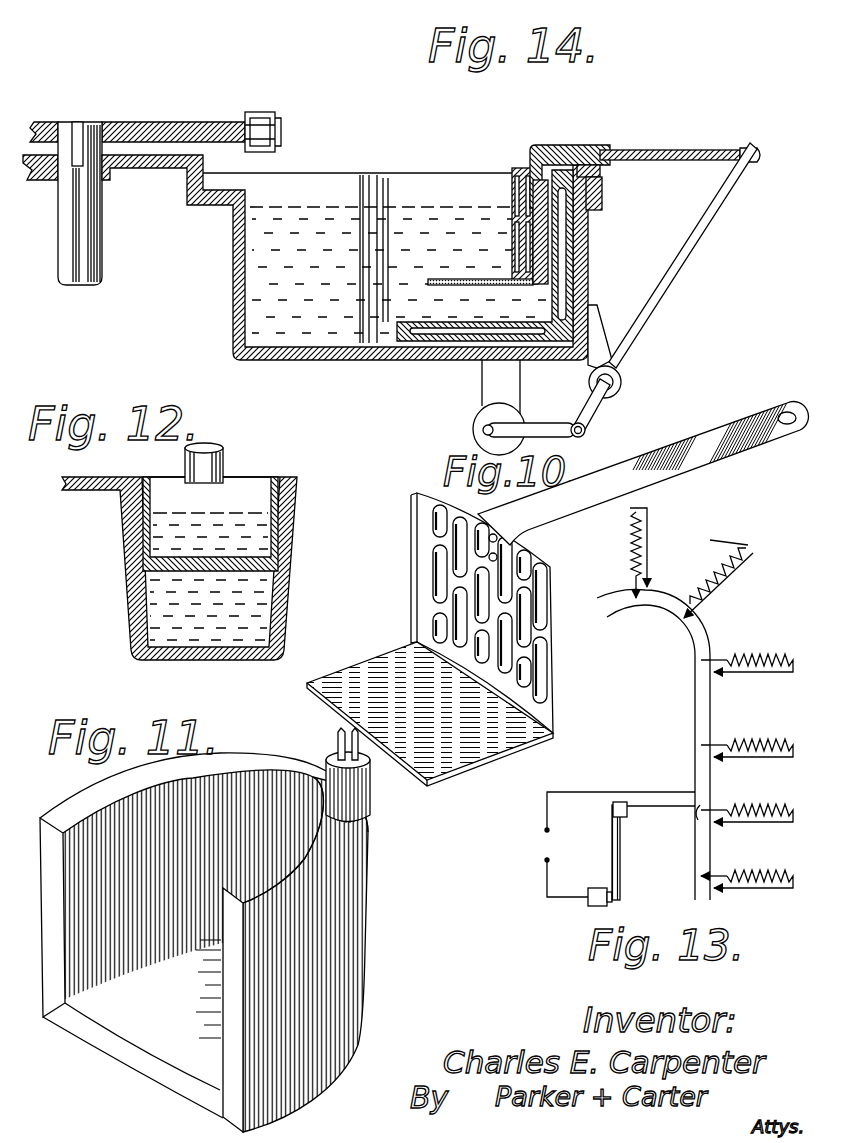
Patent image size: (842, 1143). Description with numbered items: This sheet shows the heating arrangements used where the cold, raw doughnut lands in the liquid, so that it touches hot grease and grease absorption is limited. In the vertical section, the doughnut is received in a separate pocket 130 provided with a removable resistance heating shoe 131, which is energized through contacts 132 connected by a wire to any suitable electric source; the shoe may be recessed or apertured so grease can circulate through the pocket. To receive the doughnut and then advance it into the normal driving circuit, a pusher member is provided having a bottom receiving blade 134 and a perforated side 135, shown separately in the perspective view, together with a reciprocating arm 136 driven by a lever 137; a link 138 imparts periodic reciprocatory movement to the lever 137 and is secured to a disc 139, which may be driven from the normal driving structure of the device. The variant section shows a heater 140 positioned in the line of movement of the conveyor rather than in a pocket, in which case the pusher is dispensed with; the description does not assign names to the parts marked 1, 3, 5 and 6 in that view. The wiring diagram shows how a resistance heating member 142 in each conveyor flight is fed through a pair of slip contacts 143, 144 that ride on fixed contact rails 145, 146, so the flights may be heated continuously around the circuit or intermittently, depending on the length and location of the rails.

In FIG. 12, the fryer unit 1 is at (116, 574).
In FIG. 12, the cup 3 is at (135, 612).
In FIG. 12, the cooking liquid 5 is at (292, 590).
In FIG. 14, the supporting bracket 6 is at (309, 165).
In FIG. 14, the pocket 130 is at (464, 157).
In FIG. 14, the heating shoe 131 is at (491, 320).
In FIG. 11, the heating shoe 131 is at (367, 925).
In FIG. 11, the contacts 132 is at (340, 732).
In FIG. 14, the bottom receiving blade 134 is at (480, 280).
In FIG. 10, the bottom receiving blade 134 is at (389, 661).
In FIG. 14, the perforated side 135 is at (532, 255).
In FIG. 10, the perforated side 135 is at (428, 539).
In FIG. 14, the reciprocating arm 136 is at (636, 150).
In FIG. 10, the reciprocating arm 136 is at (729, 433).
In FIG. 14, the lever 137 is at (658, 299).
In FIG. 14, the link 138 is at (543, 423).
In FIG. 14, the disc 139 is at (481, 410).
In FIG. 12, the heater 140 is at (262, 537).
In FIG. 13, the resistance heating member 142 is at (643, 540).
In FIG. 13, the slip contact 143 is at (680, 630).
In FIG. 13, the slip contact 144 is at (700, 618).
In FIG. 13, the contact rail 145 is at (694, 693).
In FIG. 13, the contact rail 146 is at (710, 712).